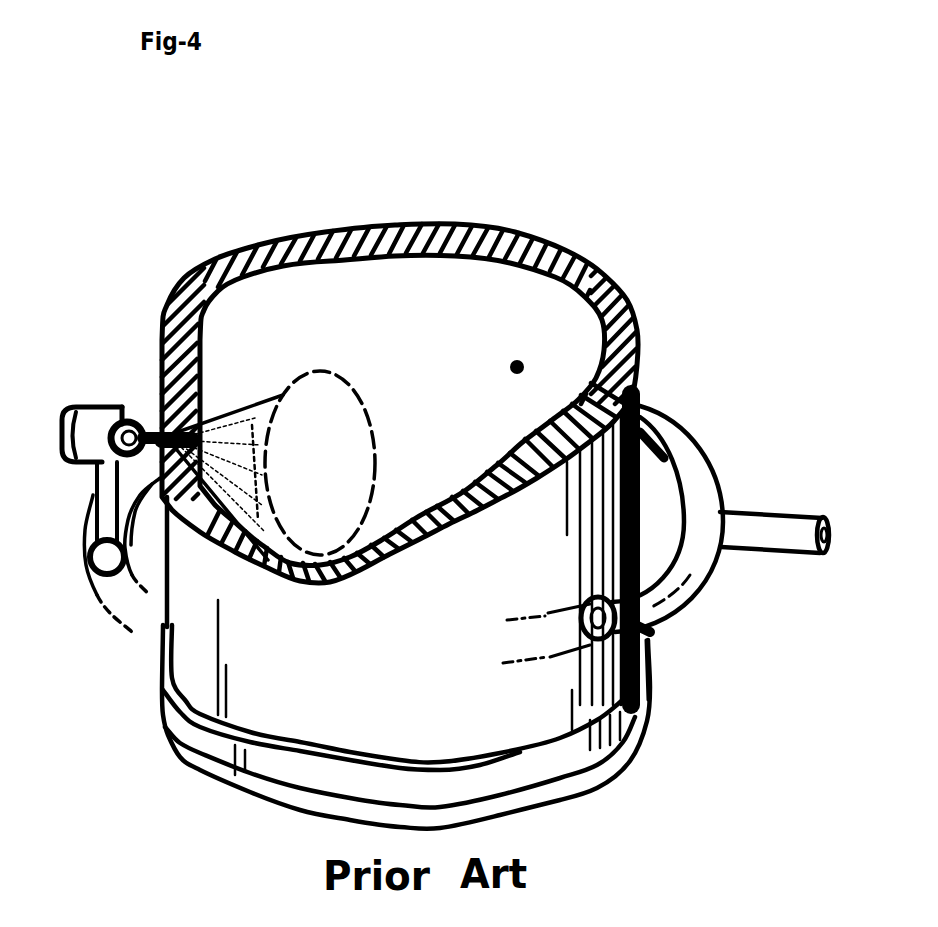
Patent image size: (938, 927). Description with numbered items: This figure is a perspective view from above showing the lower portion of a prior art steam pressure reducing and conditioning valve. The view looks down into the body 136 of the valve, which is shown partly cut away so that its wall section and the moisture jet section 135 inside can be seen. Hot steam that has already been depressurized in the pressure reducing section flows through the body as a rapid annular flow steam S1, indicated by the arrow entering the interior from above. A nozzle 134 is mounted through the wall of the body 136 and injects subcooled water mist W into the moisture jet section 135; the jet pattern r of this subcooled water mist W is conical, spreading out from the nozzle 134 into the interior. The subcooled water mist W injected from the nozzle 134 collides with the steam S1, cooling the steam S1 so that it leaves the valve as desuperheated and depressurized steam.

The nozzle 134 is at (150, 427).
The moisture jet section 135 is at (380, 293).
The body 136 is at (606, 282).
The rapid annular flow steam S1 is at (433, 272).
The subcooled water mist W is at (253, 432).
The jet pattern r is at (340, 380).